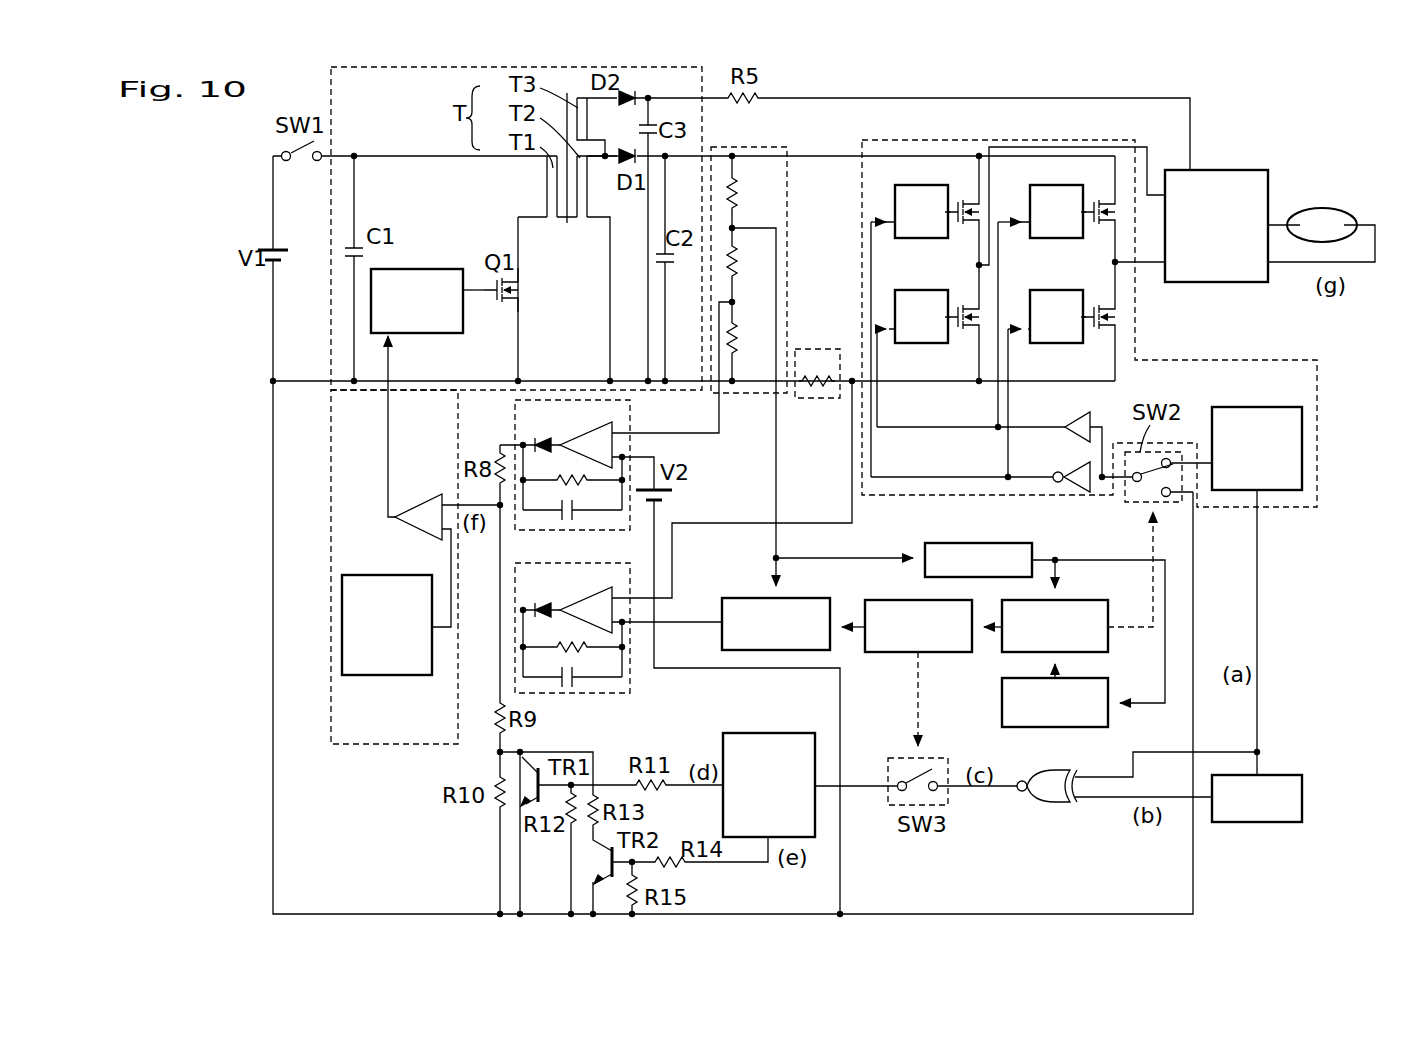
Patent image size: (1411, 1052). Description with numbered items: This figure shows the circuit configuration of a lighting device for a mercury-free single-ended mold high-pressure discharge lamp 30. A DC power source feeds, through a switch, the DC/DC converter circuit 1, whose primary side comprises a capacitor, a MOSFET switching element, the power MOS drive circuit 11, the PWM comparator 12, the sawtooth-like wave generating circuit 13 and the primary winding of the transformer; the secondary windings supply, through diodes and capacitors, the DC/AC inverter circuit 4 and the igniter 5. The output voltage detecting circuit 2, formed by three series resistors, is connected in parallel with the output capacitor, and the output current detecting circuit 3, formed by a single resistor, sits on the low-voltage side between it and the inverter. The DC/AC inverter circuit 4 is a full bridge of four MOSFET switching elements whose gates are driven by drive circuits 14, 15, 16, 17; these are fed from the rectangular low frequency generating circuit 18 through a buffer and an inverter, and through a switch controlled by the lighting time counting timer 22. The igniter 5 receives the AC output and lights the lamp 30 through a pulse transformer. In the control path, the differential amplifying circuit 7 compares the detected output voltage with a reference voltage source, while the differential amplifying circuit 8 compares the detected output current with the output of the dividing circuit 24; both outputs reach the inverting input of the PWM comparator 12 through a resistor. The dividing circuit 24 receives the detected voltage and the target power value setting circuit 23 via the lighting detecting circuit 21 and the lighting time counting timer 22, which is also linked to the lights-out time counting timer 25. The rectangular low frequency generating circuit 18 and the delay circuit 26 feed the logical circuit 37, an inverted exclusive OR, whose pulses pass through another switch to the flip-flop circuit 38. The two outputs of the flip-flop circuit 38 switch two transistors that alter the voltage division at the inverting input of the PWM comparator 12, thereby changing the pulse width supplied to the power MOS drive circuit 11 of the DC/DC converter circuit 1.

The DC/DC converter circuit 1 is at (430, 67).
The output voltage detecting circuit 2 is at (770, 147).
The output current detecting circuit 3 is at (812, 349).
The DC/AC inverter circuit 4 is at (1089, 308).
The igniter 5 is at (1215, 170).
The differential amplifying circuit 7 is at (580, 530).
The differential amplifying circuit 8 is at (592, 693).
The power MOS drive circuit 11 is at (431, 269).
The PWM comparator 12 is at (425, 500).
The sawtooth-like wave generating circuit 13 is at (395, 675).
The drive circuit 14 is at (906, 238).
The drive circuit 15 is at (918, 343).
The drive circuit 16 is at (1042, 238).
The drive circuit 17 is at (1060, 343).
The rectangular low frequency generating circuit 18 is at (1242, 407).
The lighting detecting circuit 21 is at (996, 543).
The lighting time counting timer 22 is at (1072, 600).
The target power value setting circuit 23 is at (927, 652).
The dividing circuit 24 is at (792, 598).
The lights-out time counting timer 25 is at (1095, 678).
The delay circuit 26 is at (1265, 775).
The single-ended mold high-pressure discharge lamp 30 is at (1312, 208).
The logical circuit 37 is at (1050, 803).
The flip-flop circuit 38 is at (765, 733).